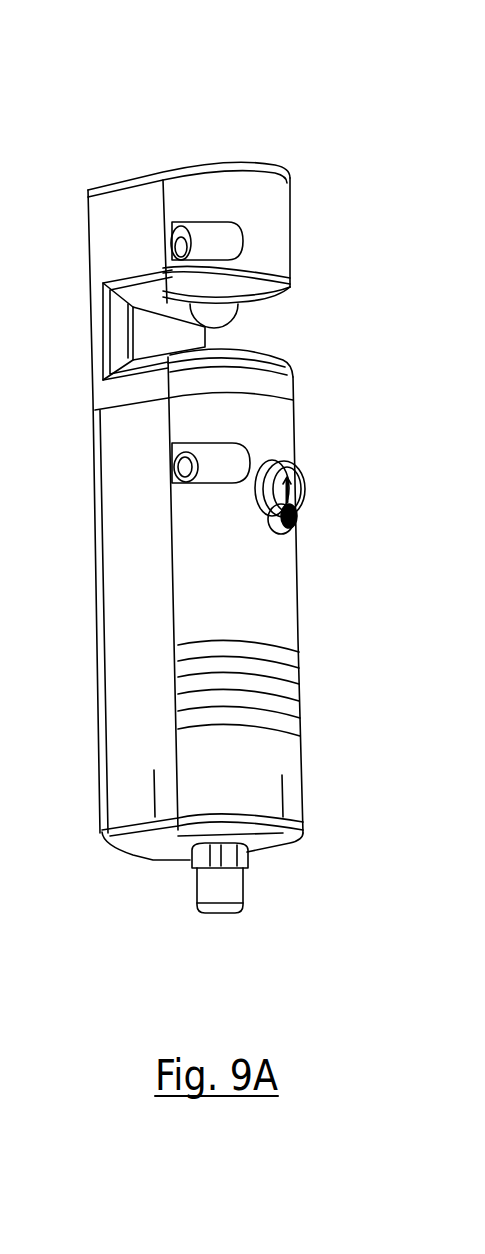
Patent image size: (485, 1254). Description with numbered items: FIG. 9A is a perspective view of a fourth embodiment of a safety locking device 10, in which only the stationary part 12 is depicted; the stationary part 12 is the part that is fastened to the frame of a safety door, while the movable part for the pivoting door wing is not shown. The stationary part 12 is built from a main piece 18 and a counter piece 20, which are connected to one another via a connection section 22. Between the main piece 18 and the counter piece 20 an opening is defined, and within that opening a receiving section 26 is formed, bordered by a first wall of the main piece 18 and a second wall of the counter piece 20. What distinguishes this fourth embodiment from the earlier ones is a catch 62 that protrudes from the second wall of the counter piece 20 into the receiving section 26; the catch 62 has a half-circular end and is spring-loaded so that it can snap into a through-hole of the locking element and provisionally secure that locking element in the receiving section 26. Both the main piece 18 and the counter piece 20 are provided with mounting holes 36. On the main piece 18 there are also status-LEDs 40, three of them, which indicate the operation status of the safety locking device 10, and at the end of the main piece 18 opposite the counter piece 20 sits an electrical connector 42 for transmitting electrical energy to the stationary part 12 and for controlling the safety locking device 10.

The safety locking device 10 is at (265, 86).
The counter piece 20 is at (268, 202).
The receiving section 26 is at (280, 318).
The catch 62 is at (222, 323).
The connection section 22 is at (98, 335).
The stationary part 12 is at (297, 428).
The mounting holes 36 is at (170, 453).
The main piece 18 is at (280, 600).
The status-LEDs 40 is at (303, 692).
The electrical connector 42 is at (220, 883).